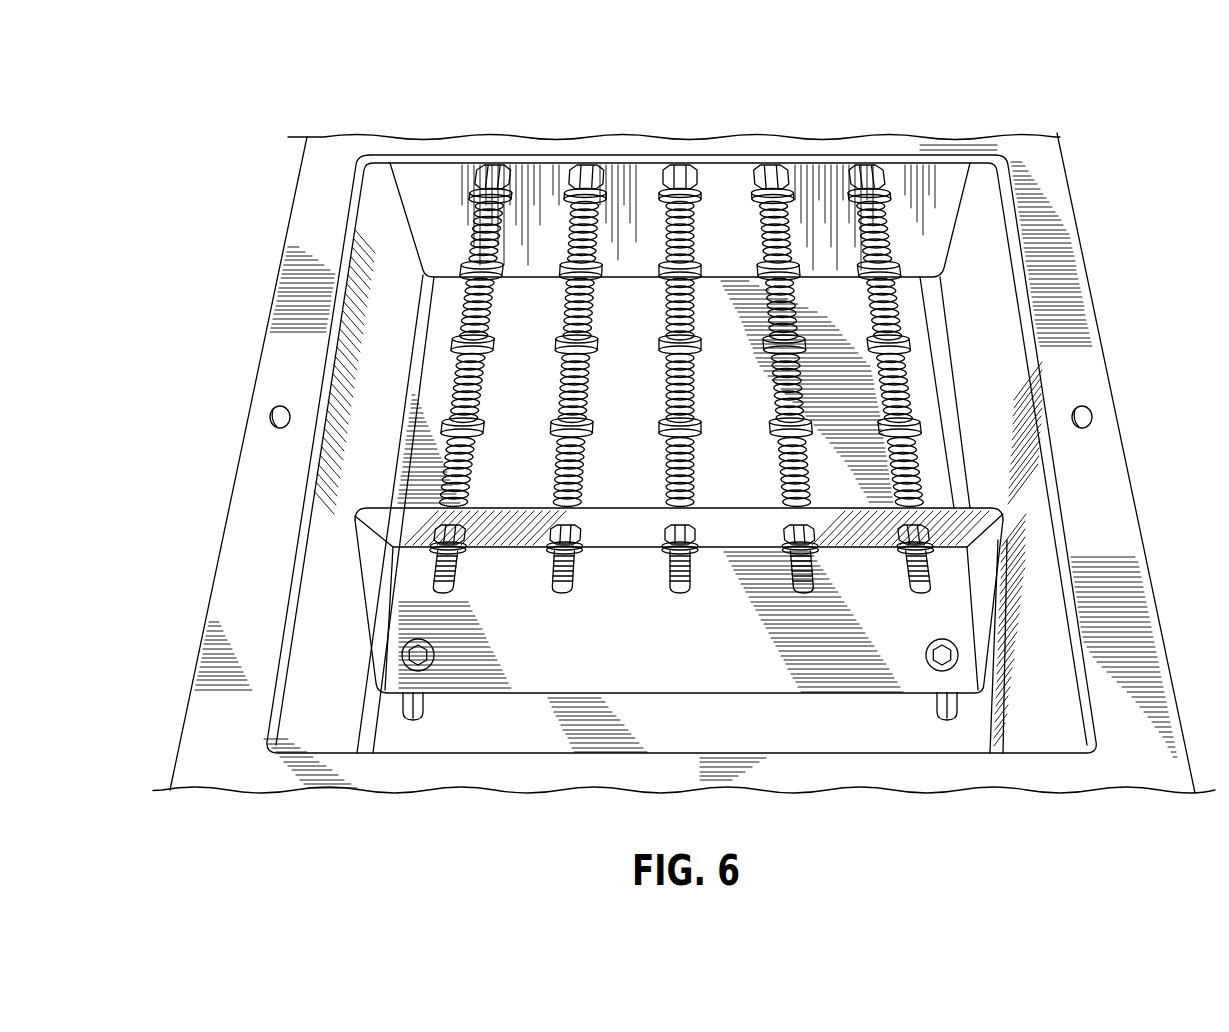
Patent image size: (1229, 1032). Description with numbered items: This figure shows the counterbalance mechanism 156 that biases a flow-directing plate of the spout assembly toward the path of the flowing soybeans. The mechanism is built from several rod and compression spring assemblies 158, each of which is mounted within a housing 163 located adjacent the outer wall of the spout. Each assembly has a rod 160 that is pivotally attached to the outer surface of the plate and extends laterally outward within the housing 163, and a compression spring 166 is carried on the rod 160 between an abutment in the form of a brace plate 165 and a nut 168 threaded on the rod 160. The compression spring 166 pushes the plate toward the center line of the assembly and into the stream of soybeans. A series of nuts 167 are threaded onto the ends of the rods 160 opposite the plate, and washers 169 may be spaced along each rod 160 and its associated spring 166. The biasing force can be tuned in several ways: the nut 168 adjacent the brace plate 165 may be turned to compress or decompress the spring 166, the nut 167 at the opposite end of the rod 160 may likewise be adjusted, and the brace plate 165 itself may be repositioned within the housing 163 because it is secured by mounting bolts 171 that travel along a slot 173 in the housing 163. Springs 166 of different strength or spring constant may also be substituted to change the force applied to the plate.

The counterbalance mechanism 156 is at (298, 98).
The rod and compression spring assembly 158 is at (559, 602).
The rod 160 is at (556, 572).
The housing 163 is at (263, 505).
The brace plate 165 is at (622, 531).
The compression spring 166 is at (468, 222).
The nut 167 is at (493, 177).
The nut 168 is at (430, 543).
The washer 169 is at (607, 200).
The mounting bolt 171 is at (927, 668).
The slot 173 is at (940, 727).